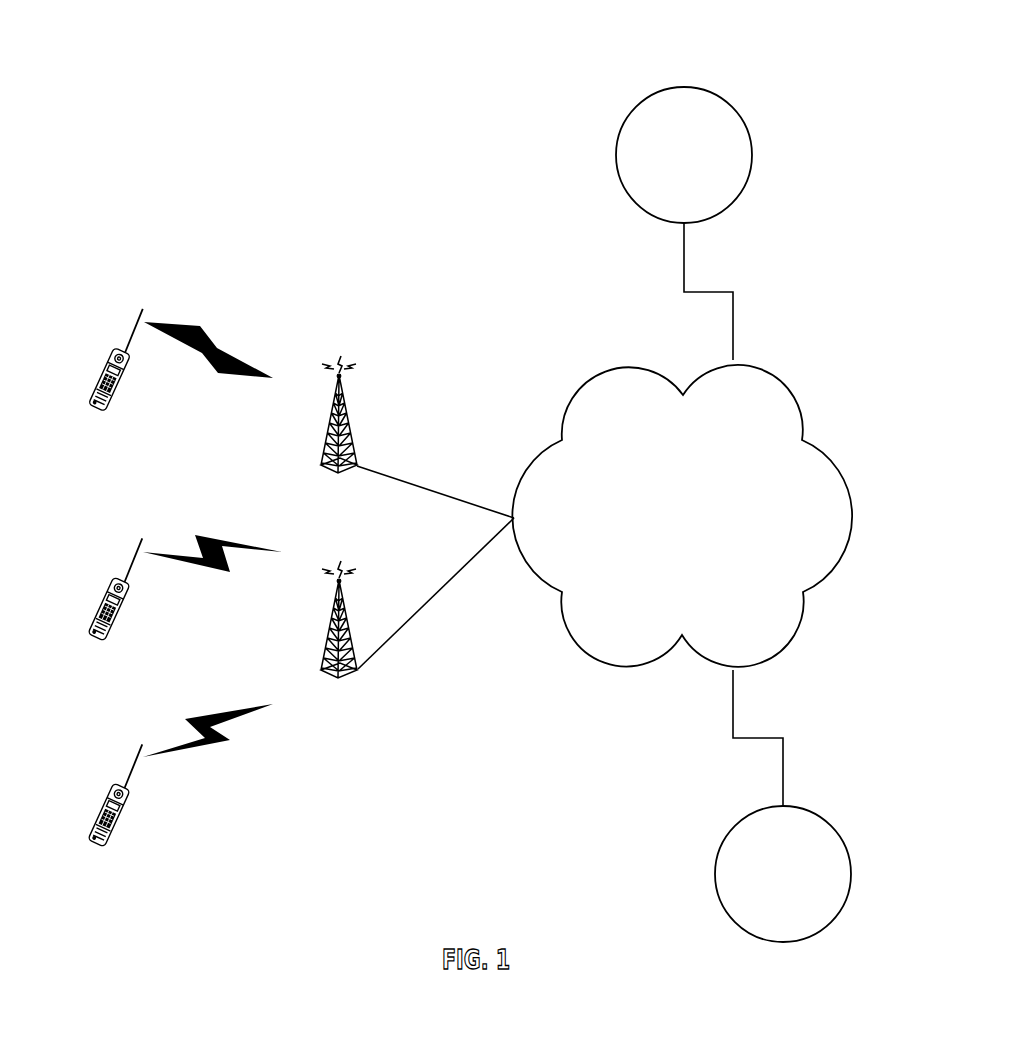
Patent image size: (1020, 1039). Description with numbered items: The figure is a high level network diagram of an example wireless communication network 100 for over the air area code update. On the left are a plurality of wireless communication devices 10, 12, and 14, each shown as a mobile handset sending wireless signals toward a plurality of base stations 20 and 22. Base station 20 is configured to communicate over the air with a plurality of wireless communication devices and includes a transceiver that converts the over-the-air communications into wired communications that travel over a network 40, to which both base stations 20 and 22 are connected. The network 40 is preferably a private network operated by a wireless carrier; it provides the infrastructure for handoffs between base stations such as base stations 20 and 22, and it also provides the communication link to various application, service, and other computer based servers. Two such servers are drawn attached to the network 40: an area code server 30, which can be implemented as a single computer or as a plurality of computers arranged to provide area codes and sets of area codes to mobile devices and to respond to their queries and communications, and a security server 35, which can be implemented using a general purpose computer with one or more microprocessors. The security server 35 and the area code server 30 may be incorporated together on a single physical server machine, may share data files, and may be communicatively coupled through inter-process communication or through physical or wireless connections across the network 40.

The wireless communication network 100 is at (445, 76).
The wireless communication device 10 is at (111, 372).
The wireless communication device 12 is at (110, 602).
The wireless communication device 14 is at (110, 805).
The base station 20 is at (348, 413).
The base station 22 is at (348, 620).
The area code server 30 is at (783, 806).
The security server 35 is at (684, 223).
The network 40 is at (682, 516).